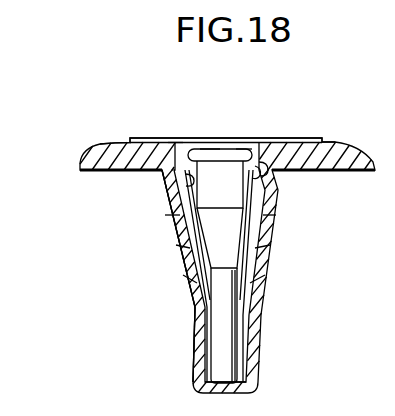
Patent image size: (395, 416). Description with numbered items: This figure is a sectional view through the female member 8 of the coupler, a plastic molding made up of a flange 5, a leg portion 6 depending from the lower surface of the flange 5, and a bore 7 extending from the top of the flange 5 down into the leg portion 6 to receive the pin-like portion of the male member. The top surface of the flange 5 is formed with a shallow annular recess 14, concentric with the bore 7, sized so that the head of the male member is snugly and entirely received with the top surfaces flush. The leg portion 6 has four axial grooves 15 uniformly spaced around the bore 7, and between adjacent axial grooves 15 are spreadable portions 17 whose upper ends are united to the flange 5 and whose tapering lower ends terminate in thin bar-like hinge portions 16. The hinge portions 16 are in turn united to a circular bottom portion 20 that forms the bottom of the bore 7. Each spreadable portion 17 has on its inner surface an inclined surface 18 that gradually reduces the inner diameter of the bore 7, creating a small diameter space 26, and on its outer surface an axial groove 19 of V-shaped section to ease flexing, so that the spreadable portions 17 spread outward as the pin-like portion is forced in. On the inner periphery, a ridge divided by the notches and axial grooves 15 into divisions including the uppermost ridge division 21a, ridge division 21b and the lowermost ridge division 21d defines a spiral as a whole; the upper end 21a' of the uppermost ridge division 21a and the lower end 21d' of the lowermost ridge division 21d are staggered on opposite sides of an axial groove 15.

The flange 5 is at (92, 171).
The leg portion 6 is at (143, 276).
The bore 7 is at (232, 192).
The female member 8 is at (93, 190).
The annular recess 14 is at (310, 140).
The axial groove 15 is at (243, 302).
The hinge portion 16 is at (131, 232).
The spreadable portion 17 is at (175, 218).
The inclined surface 18 is at (190, 255).
The axial groove 19 is at (195, 283).
The bottom portion 20 is at (240, 388).
The ridge division 21a is at (256, 125).
The upper end of ridge division 21a' is at (217, 115).
The ridge division 21b is at (266, 171).
The ridge division 21d is at (185, 186).
The lower end of ridge division 21d' is at (162, 122).
The small diameter space 26 is at (225, 361).